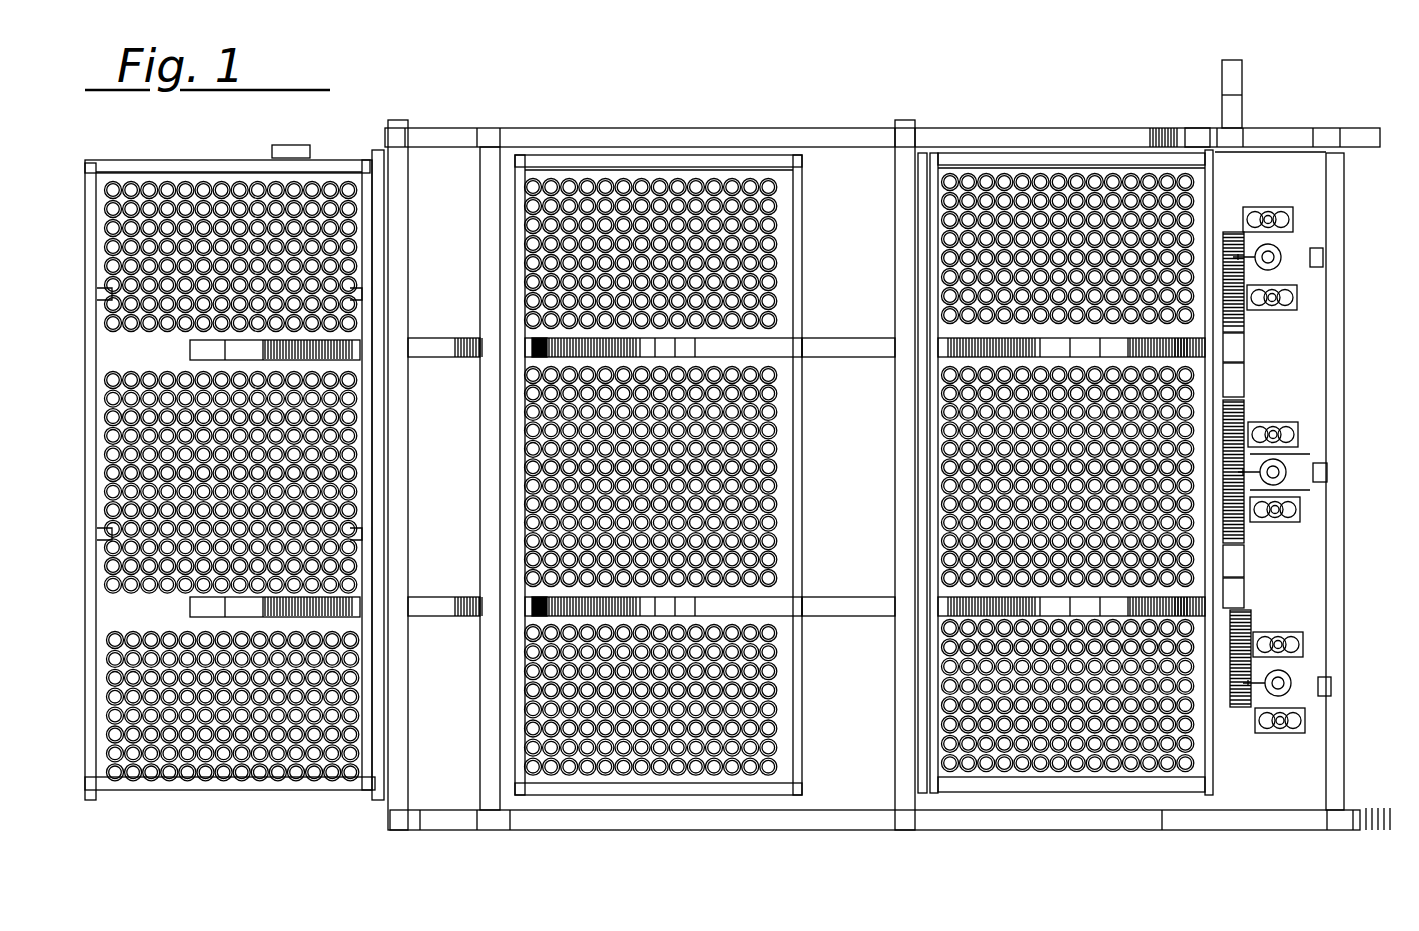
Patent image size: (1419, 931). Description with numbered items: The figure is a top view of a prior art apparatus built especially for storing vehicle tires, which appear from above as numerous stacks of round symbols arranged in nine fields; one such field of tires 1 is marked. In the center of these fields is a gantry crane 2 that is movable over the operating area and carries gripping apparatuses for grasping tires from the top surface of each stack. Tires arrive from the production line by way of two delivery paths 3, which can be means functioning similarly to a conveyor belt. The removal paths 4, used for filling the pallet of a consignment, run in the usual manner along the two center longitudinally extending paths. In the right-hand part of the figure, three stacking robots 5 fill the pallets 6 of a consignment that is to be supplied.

The field of tires 1 is at (625, 242).
The gantry crane 2 is at (788, 253).
The delivery path 3 is at (1212, 71).
The removal path 4 is at (848, 348).
The stacking robot 5 is at (1268, 245).
The pallet 6 is at (1297, 290).